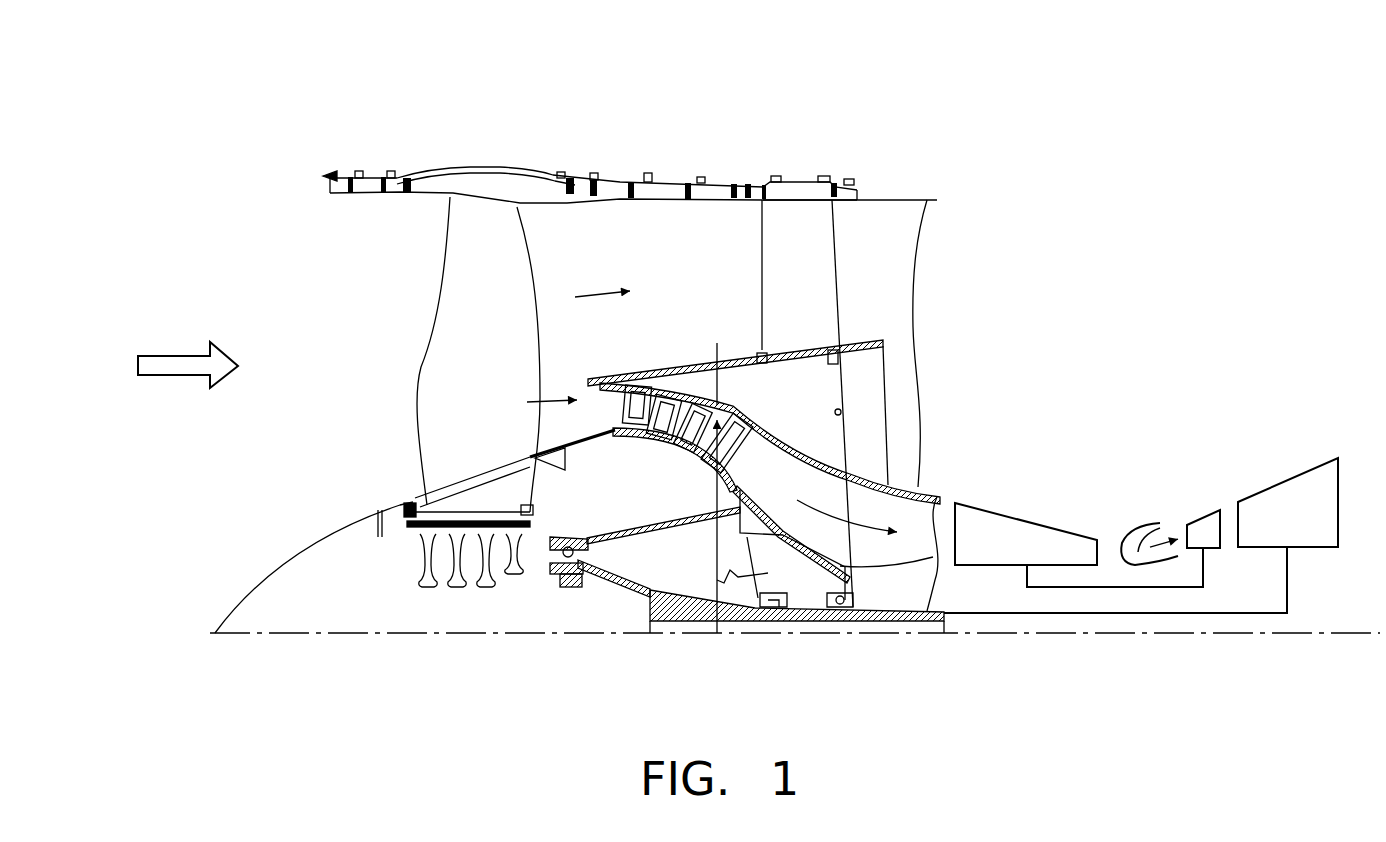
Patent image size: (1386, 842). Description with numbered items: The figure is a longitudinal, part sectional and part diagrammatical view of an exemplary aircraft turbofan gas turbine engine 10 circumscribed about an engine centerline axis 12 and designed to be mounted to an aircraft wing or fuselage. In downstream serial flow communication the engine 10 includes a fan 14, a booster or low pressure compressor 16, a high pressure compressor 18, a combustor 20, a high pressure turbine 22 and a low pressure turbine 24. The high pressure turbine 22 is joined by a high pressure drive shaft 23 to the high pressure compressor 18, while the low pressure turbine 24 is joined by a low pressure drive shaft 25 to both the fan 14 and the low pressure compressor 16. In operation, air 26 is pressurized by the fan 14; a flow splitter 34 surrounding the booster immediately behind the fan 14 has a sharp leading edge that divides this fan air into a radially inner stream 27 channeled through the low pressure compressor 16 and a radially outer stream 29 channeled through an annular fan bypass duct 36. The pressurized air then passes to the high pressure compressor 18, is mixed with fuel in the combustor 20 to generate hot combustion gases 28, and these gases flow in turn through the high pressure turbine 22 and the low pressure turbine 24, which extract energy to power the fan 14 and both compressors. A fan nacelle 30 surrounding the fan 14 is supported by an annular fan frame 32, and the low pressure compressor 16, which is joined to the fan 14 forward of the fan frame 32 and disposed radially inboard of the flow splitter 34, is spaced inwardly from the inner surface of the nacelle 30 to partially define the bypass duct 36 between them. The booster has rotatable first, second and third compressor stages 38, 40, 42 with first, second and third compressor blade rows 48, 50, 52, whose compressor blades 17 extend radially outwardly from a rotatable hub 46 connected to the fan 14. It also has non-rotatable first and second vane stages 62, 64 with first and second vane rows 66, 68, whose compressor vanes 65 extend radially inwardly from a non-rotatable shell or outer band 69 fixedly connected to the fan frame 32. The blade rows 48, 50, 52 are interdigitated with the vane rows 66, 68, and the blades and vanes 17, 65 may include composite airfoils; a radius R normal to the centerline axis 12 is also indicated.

The aircraft turbofan gas turbine engine 10 is at (1160, 118).
The engine centerline axis 12 is at (1187, 637).
The fan 14 is at (478, 333).
The booster or low pressure compressor 16 is at (660, 470).
The compressor blades 17 is at (640, 378).
The high pressure compressor 18 is at (1017, 555).
The combustor 20 is at (1133, 530).
The high pressure turbine (HPT) 22 is at (1198, 523).
The high pressure drive shaft 23 is at (1137, 588).
The low pressure turbine (LPT) 24 is at (1290, 532).
The low pressure drive shaft 25 is at (1053, 615).
The air 26 is at (182, 377).
The radially inner stream 27 is at (543, 420).
The hot combustion gases 28 is at (1140, 547).
The radially outer stream 29 is at (594, 295).
The fan nacelle 30 is at (503, 185).
The annular fan frame 32 is at (835, 232).
The flow splitter 34 is at (644, 376).
The annular fan bypass duct 36 is at (674, 248).
The first compressor stage 38 is at (627, 440).
The second compressor stage 40 is at (668, 452).
The third compressor stage 42 is at (706, 478).
The rotatable hub 46 is at (657, 452).
The first compressor blade row 48 is at (630, 412).
The second compressor blade row 50 is at (694, 395).
The third compressor blade row 52 is at (750, 416).
The first vane stage 62 is at (665, 372).
The second vane stage 64 is at (737, 408).
The compressor vanes 65 is at (714, 403).
The first vane row 66 is at (658, 437).
The second vane row 68 is at (680, 453).
The outer band 69 is at (657, 410).